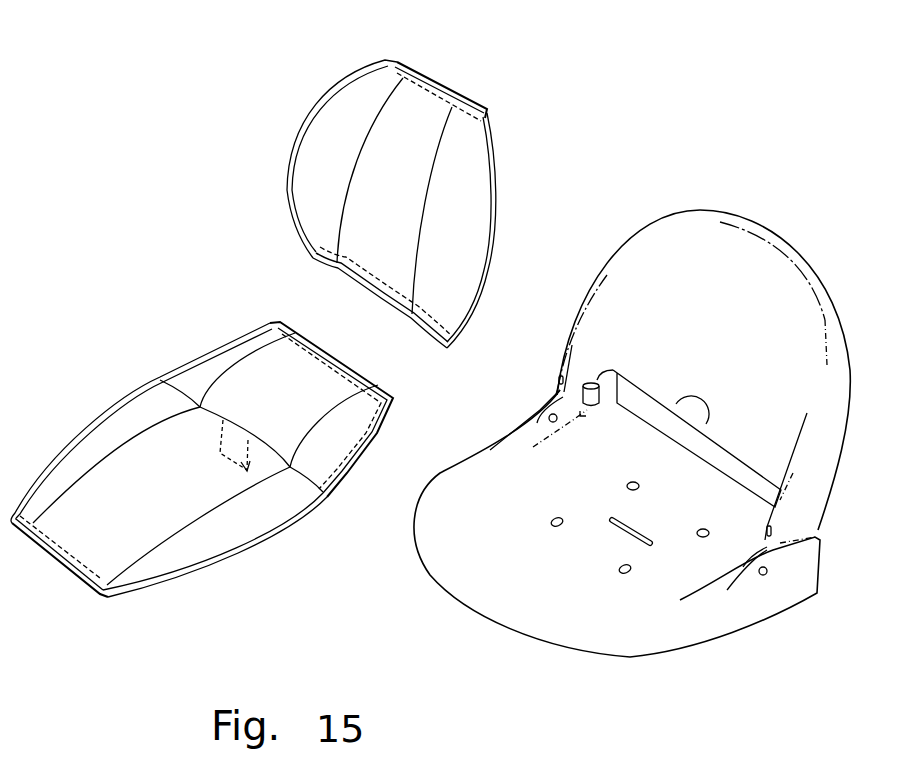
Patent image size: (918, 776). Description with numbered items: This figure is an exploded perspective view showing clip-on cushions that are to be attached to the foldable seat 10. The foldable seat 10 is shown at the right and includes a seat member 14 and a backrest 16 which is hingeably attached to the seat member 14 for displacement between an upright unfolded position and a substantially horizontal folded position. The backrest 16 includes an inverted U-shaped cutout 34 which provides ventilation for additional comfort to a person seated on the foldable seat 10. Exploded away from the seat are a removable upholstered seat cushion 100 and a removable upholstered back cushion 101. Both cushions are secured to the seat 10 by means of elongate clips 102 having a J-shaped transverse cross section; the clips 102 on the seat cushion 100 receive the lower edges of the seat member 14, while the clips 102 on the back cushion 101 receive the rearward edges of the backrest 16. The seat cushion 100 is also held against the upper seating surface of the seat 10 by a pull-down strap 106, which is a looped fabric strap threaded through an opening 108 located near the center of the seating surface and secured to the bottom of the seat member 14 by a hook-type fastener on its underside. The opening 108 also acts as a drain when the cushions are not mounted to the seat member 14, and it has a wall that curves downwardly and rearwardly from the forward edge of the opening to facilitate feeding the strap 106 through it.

The foldable seat 10 is at (632, 417).
The seat member 14 is at (617, 635).
The backrest 16 is at (782, 258).
The inverted U-shaped cutout 34 is at (703, 427).
The seat cushion 100 is at (223, 537).
The back cushion 101 is at (490, 183).
The elongate clips 102 is at (415, 70).
The pull-down strap 106 is at (250, 472).
The opening 108 is at (637, 533).